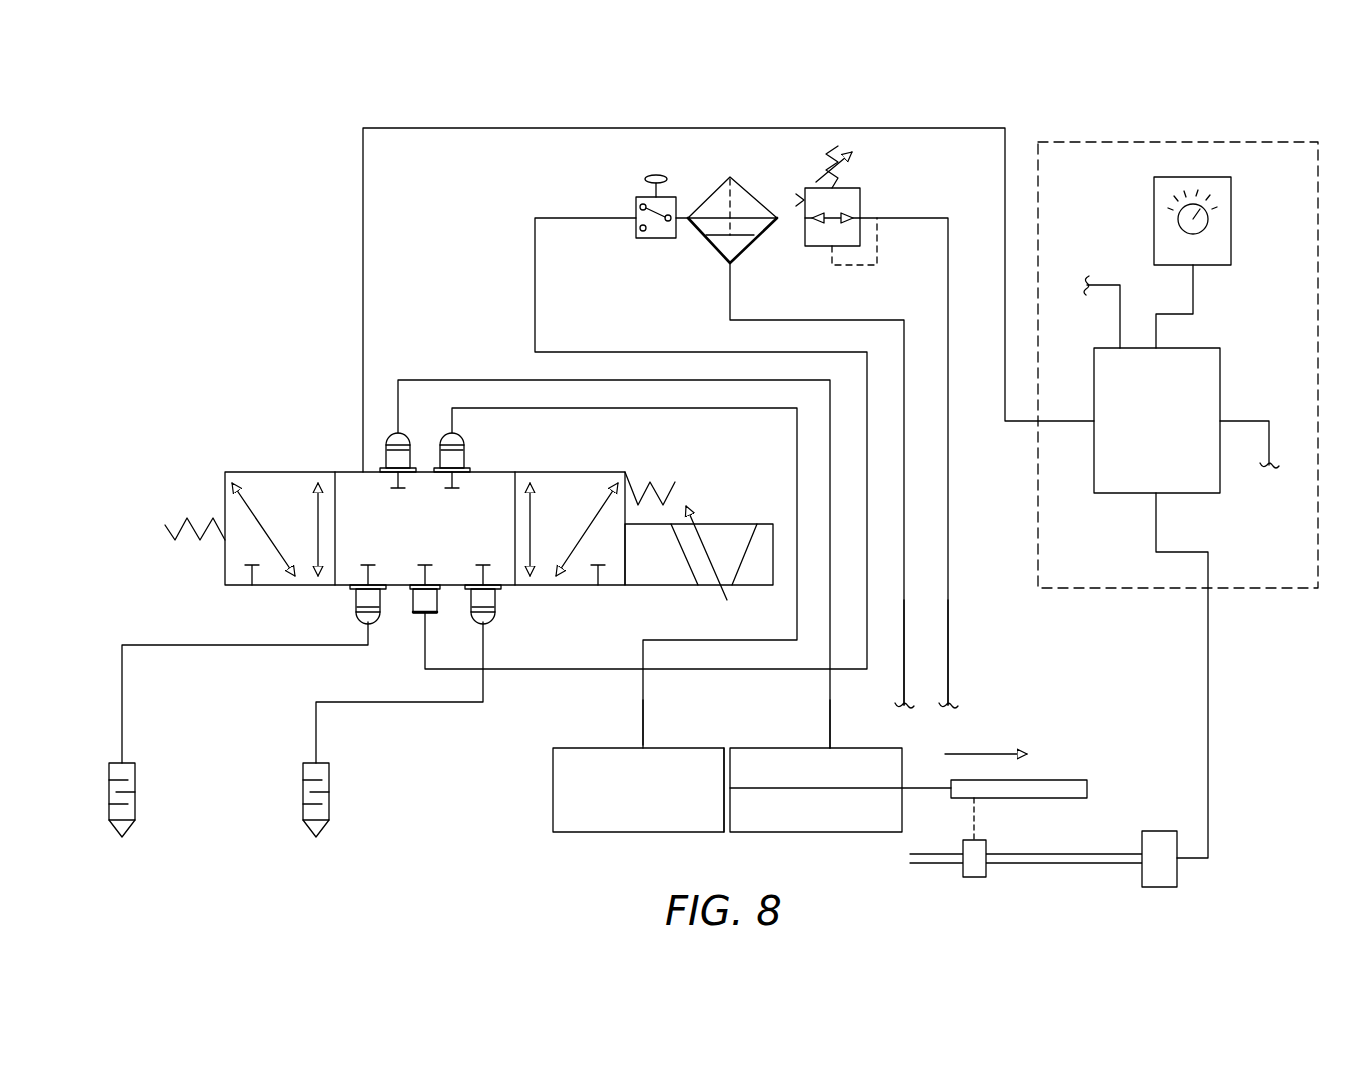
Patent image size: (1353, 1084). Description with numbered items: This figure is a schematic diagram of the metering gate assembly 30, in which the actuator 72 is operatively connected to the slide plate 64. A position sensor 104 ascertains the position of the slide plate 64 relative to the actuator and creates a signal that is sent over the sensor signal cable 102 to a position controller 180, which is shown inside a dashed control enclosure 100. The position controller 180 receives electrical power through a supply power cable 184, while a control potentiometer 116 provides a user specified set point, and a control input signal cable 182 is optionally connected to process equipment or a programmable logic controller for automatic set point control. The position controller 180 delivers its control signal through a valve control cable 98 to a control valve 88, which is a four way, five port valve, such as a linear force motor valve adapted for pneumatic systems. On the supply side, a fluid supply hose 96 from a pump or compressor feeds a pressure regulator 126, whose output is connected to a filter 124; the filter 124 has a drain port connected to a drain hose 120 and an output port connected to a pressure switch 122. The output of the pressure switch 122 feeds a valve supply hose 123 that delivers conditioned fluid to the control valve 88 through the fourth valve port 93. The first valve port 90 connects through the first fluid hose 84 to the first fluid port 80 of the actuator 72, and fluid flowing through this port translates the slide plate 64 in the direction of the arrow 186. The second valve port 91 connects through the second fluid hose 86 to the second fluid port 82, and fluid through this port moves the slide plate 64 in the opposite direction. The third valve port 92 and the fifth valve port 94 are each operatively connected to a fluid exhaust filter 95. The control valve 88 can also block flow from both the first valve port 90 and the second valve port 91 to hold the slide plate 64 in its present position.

The metering gate assembly 30 is at (733, 110).
The slide plate 64 is at (1045, 779).
The actuator 72 is at (668, 832).
The first fluid port 80 is at (643, 748).
The second fluid port 82 is at (830, 748).
The first fluid hose 84 is at (643, 697).
The second fluid hose 86 is at (500, 380).
The control valve 88 is at (278, 472).
The first valve port 90 is at (446, 436).
The second valve port 91 is at (392, 436).
The third valve port 92 is at (472, 604).
The fourth valve port 93 is at (418, 605).
The fifth valve port 94 is at (356, 602).
The fluid exhaust filter 95 is at (303, 781).
The fluid supply hose 96 is at (948, 668).
The valve control cable 98 is at (560, 128).
The controller 100 is at (1135, 132).
The sensor signal cable 102 is at (1210, 742).
The position sensor 104 is at (1080, 878).
The control potentiometer 116 is at (1225, 178).
The drain hose 120 is at (904, 632).
The pressure switch 122 is at (670, 197).
The valve supply hose 123 is at (533, 279).
The filter 124 is at (745, 191).
The pressure regulator 126 is at (850, 186).
The position controller 180 is at (1225, 385).
The control input signal cable 182 is at (1273, 445).
The supply power cable 184 is at (1108, 283).
The arrow 186 is at (985, 755).